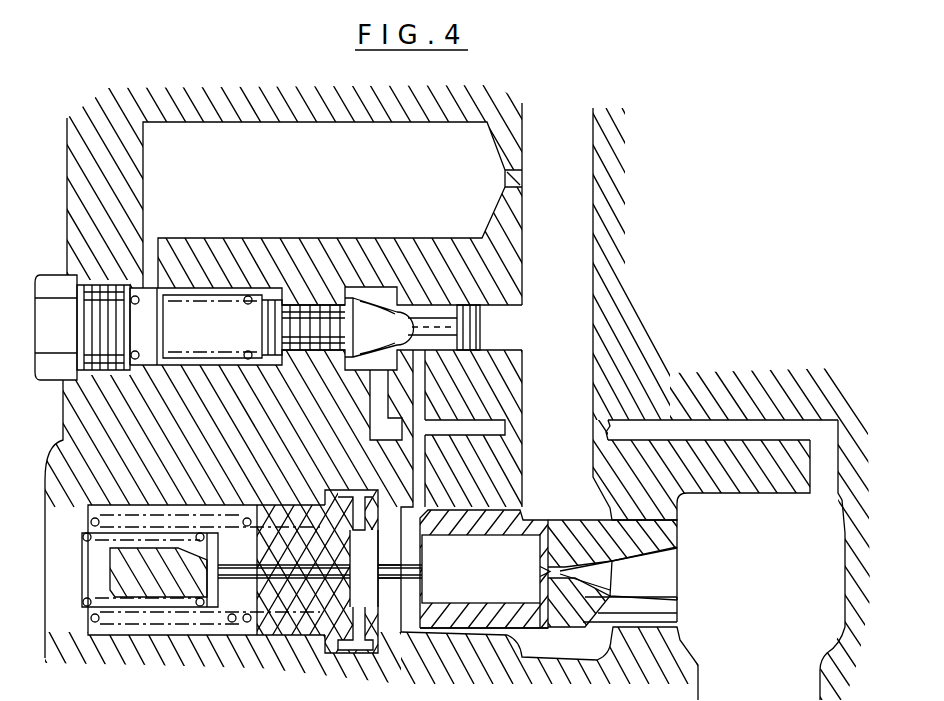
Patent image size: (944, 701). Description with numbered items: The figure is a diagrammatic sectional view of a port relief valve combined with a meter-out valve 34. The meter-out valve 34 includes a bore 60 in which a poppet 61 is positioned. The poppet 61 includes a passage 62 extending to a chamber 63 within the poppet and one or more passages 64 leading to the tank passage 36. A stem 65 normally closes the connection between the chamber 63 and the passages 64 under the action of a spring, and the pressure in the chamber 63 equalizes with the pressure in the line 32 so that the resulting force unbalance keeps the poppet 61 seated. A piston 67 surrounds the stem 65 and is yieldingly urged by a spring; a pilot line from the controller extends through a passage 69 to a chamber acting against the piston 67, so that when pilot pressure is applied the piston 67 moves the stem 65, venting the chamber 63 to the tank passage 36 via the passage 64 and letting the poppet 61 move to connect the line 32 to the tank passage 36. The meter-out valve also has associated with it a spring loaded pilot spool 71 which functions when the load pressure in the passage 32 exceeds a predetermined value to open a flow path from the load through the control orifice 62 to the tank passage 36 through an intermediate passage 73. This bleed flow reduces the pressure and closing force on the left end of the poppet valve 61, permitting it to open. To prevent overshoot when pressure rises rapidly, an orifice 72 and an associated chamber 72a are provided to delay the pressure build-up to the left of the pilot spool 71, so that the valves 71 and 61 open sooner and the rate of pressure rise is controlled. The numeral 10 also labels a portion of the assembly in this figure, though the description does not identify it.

The chamber 72a is at (337, 191).
The orifice 72 is at (505, 177).
The line 32 is at (597, 246).
The pilot spool 71 is at (369, 302).
The intermediate passage 73 is at (680, 424).
The piston 67 is at (273, 543).
The stem 65 is at (297, 567).
The passage 10 is at (373, 527).
The meter-out valve 34 is at (477, 505).
The passage 62 is at (531, 516).
The chamber 63 is at (481, 569).
The passage 64 is at (640, 550).
The tank passage 36 is at (785, 589).
The passage 69 is at (358, 618).
The bore 60 is at (450, 627).
The poppet 61 is at (495, 615).